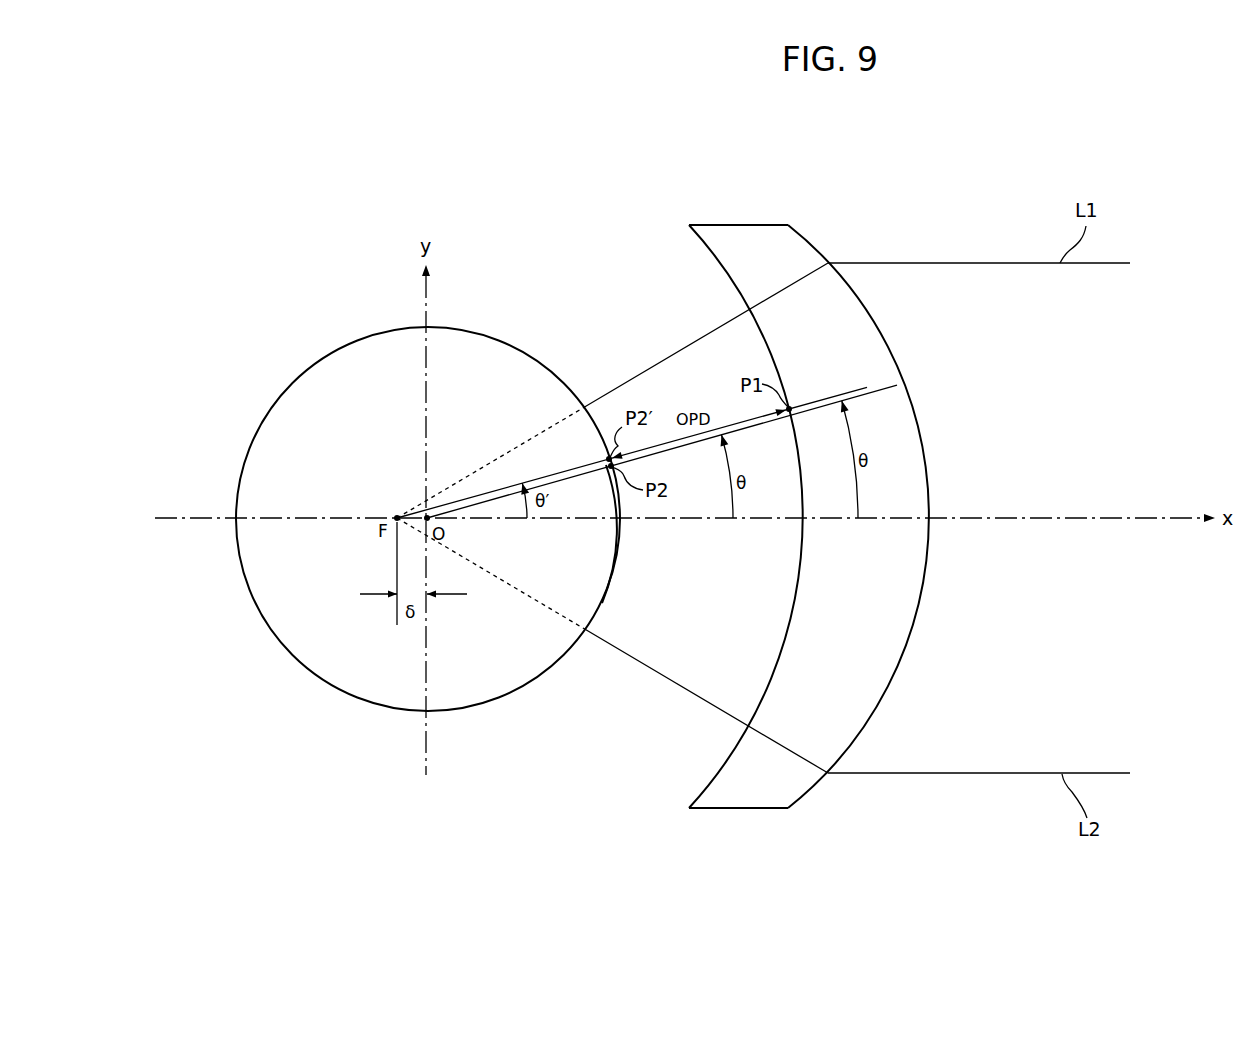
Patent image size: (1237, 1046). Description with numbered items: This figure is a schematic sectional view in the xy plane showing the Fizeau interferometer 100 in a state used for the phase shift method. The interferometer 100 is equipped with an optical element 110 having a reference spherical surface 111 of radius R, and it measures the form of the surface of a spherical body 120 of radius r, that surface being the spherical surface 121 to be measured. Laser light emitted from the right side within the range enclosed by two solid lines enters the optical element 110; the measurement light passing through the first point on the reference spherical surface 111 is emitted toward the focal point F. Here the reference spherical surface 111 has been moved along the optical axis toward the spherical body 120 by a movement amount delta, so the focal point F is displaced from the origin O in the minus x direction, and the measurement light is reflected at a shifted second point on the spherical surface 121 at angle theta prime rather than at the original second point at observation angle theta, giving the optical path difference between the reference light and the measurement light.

The Fizeau interferometer 100 is at (783, 458).
The optical element 110 is at (786, 235).
The reference spherical surface 111 is at (707, 251).
The spherical body 120 is at (331, 671).
The spherical surface to be measured 121 is at (600, 603).